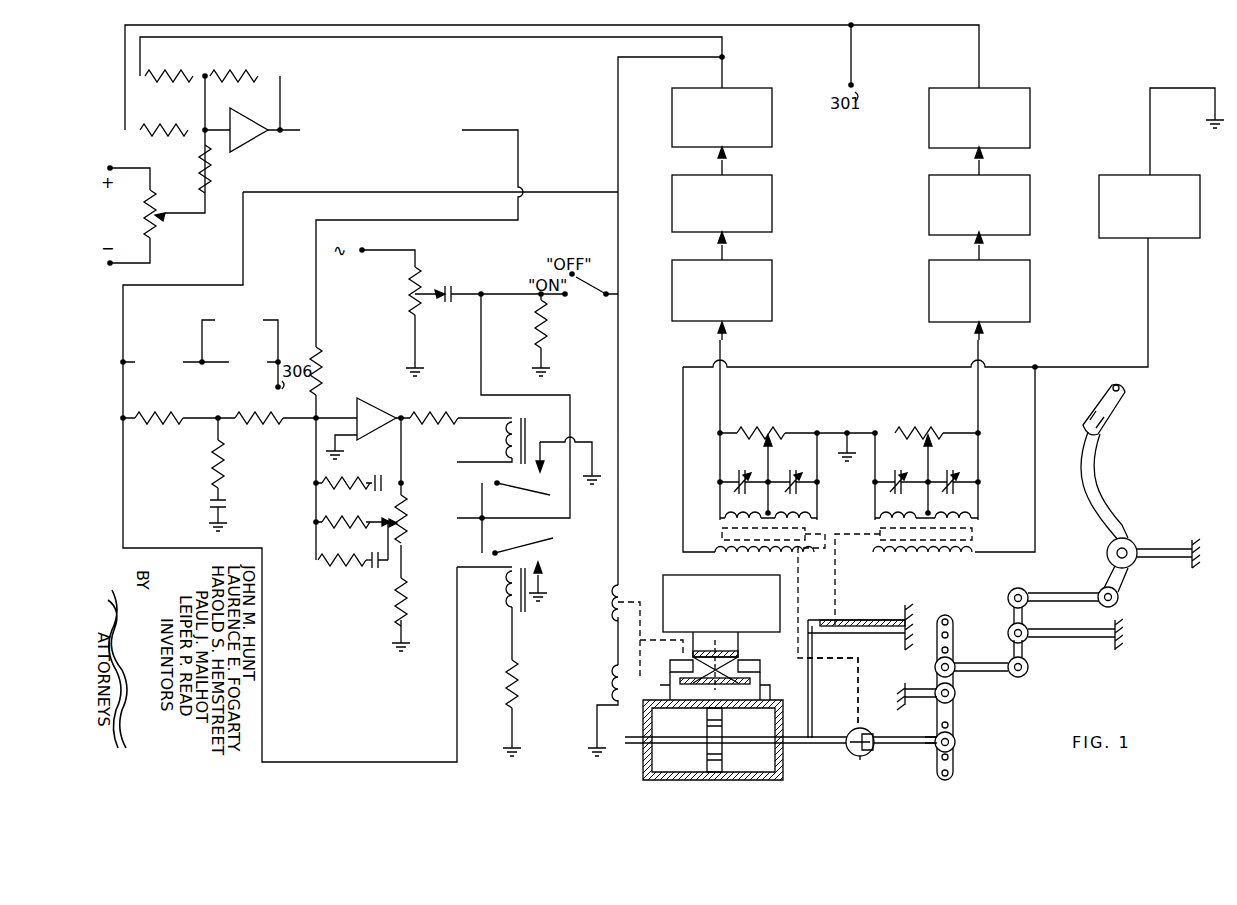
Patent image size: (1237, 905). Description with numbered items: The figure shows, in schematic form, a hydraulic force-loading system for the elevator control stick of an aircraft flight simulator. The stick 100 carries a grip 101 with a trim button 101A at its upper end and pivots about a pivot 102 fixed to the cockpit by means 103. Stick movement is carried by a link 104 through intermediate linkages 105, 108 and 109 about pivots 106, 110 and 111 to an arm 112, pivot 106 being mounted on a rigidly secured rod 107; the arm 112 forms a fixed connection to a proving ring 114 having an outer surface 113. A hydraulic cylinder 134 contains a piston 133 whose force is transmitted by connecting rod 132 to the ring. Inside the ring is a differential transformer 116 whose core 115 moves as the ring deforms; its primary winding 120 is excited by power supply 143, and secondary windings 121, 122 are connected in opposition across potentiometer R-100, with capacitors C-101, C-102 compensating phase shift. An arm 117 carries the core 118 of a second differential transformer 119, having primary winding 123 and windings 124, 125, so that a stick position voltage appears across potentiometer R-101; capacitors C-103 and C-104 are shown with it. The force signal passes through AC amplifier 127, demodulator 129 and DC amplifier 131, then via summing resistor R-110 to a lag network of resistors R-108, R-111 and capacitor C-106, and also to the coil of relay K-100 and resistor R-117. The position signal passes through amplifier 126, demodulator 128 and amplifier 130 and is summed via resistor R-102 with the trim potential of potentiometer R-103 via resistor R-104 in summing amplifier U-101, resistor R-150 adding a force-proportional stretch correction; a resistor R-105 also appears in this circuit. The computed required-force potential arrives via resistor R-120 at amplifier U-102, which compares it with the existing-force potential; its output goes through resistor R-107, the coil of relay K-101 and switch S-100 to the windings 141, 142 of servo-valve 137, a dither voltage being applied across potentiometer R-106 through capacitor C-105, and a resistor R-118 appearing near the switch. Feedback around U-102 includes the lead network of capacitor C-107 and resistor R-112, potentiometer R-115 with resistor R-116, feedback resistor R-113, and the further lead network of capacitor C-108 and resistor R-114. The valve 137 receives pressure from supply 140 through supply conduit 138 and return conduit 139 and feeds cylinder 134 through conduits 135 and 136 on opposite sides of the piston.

The resistor R-150 is at (193, 68).
The feedback resistor R-105 is at (236, 66).
The summing resistor R-102 is at (194, 124).
The summing amplifier U-101 is at (252, 146).
The resistor R-104 is at (222, 170).
The potentiometer R-103 is at (165, 228).
The capacitor C-105 is at (482, 280).
The potentiometer R-106 is at (441, 297).
The On-Off switch S-100 is at (590, 272).
The resistor 620 ohm R-118 is at (553, 318).
The resistor R-120 is at (323, 372).
The summing resistor R-110 is at (192, 415).
The resistor R-111 is at (282, 415).
The resistor R-108 is at (210, 464).
The capacitor C-106 is at (232, 490).
The operational amplifier U-102 is at (366, 403).
The resistor R-107 is at (426, 405).
The relay K-101 is at (509, 455).
The capacitor C-107 is at (370, 477).
The resistor R-112 is at (319, 496).
The feedback resistor R-113 is at (322, 531).
The potentiometer R-115 is at (413, 527).
The resistor R-114 is at (355, 573).
The capacitor C-108 is at (376, 577).
The resistor R-116 is at (414, 590).
The relay K-100 is at (511, 603).
The resistor R-117 is at (525, 660).
The winding 141 is at (608, 600).
The winding 142 is at (610, 692).
The conduit 136 is at (663, 684).
The hydraulic pressure source 140 is at (718, 573).
The servo-valve 137 is at (699, 686).
The supply conduit 138 is at (672, 652).
The return conduit 139 is at (745, 652).
The conduit 135 is at (772, 676).
The hydraulic cylinder 134 is at (637, 722).
The connecting rod 132 is at (759, 727).
The piston 133 is at (708, 722).
The core 115 is at (720, 535).
The primary winding 120 is at (748, 560).
The direct-coupled amplifier 131 is at (775, 112).
The demodulator 129 is at (776, 190).
The alternating current amplifier 127 is at (774, 283).
The amplifier 130 is at (929, 130).
The demodulator 128 is at (928, 205).
The alternating voltage amplifier 126 is at (926, 300).
The power supply 143 is at (1136, 168).
The potentiometer R-100 is at (748, 418).
The potentiometer R-101 is at (908, 418).
The capacitor C-101 is at (732, 470).
The capacitor C-102 is at (782, 470).
The variable capacitor C-103 is at (887, 470).
The variable capacitor C-104 is at (939, 470).
The secondary winding 121 is at (756, 505).
The secondary winding 122 is at (778, 502).
The winding 124 is at (883, 502).
The winding 125 is at (936, 502).
The core 118 is at (975, 534).
The primary winding 123 is at (820, 566).
The second differential transformer 119 is at (858, 638).
The arm 117 is at (821, 680).
The stick 100 is at (1110, 444).
The grip 101 is at (1116, 424).
The trim button 101A is at (1116, 391).
The pivot 102 is at (1133, 541).
The means 103 is at (1174, 572).
The link 104 is at (1047, 584).
The pivot 106 is at (1006, 632).
The intermediate linkage 105 is at (1045, 646).
The rod 107 is at (1085, 618).
The intermediate linkage 108 is at (981, 684).
The intermediate linkage 109 is at (925, 653).
The pivot 110 is at (956, 709).
The proving ring 114 is at (887, 726).
The pivot 111 is at (963, 749).
The arm 112 is at (924, 754).
The outer surface 113 is at (852, 760).
The differential transformer 116 is at (872, 758).